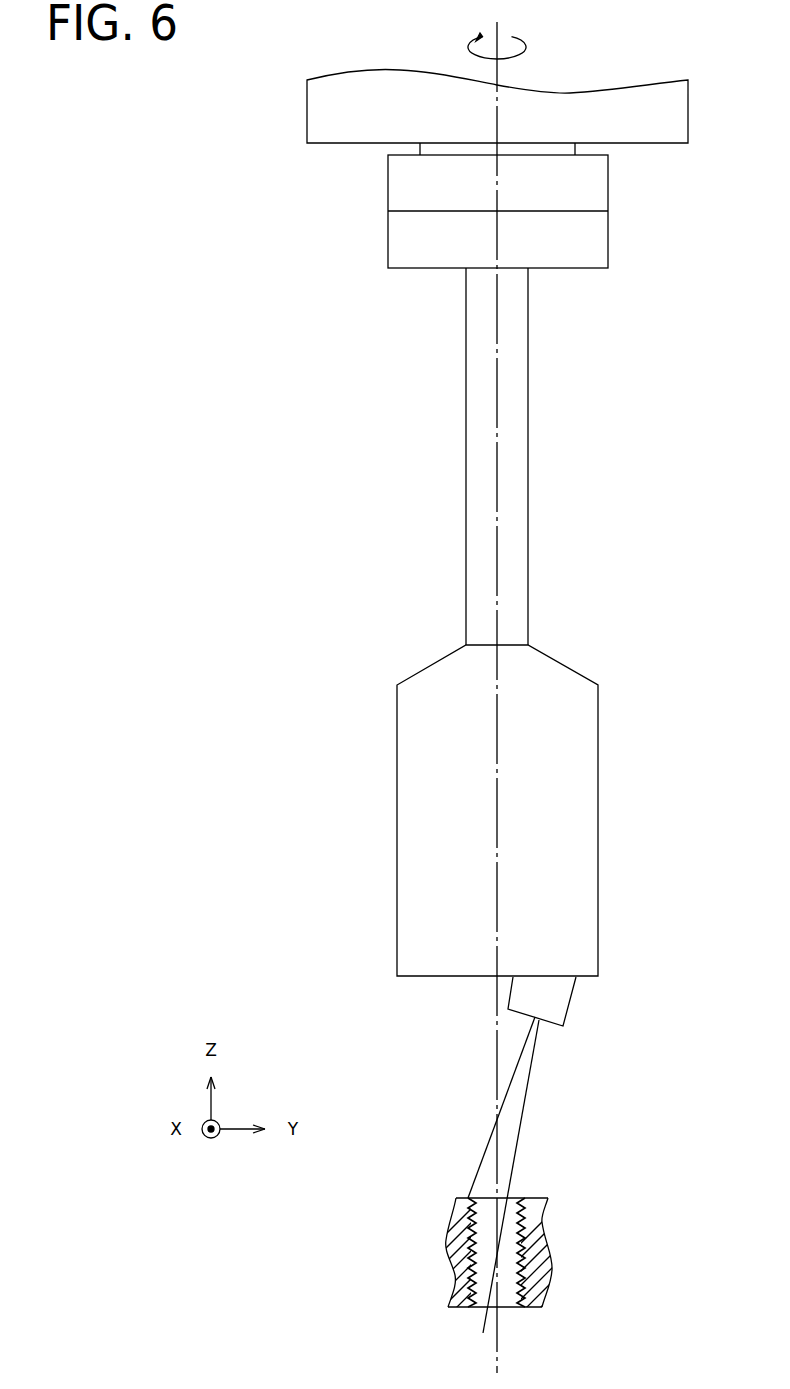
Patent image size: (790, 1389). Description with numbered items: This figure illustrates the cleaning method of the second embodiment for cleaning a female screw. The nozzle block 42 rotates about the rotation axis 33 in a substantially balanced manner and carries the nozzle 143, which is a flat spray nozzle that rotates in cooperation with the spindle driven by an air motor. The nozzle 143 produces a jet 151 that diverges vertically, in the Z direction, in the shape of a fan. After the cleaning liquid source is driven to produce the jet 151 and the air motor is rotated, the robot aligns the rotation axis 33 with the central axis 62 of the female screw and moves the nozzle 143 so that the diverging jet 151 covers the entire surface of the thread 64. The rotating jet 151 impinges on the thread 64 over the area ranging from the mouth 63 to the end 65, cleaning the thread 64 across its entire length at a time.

The rotation axis 33 is at (497, 70).
The nozzle block 42 is at (598, 797).
The nozzle 143 is at (572, 998).
The jet 151 is at (523, 1115).
The central axis 62 is at (537, 1271).
The mouth 63 is at (518, 1198).
The thread 64 is at (509, 1260).
The end 65 is at (518, 1307).